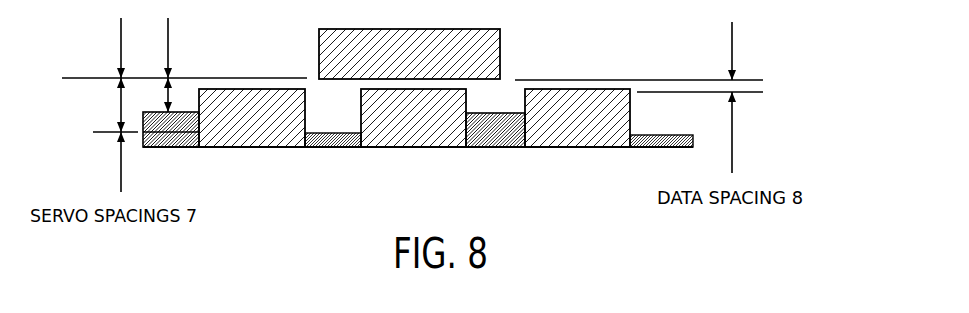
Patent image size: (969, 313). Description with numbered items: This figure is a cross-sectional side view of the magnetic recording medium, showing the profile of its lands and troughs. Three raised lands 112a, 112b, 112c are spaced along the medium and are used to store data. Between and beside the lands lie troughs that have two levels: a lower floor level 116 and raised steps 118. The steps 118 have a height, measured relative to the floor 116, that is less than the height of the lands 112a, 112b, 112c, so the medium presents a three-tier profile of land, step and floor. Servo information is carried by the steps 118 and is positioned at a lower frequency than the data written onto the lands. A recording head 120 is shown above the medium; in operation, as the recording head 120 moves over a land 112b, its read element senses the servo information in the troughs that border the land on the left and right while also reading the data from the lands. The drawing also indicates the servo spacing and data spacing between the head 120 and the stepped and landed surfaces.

The steps 118 is at (143, 117).
The floor level 116 is at (323, 131).
The recording head 120 is at (500, 43).
The land 112a is at (248, 124).
The land 112b is at (420, 124).
The land 112c is at (576, 124).